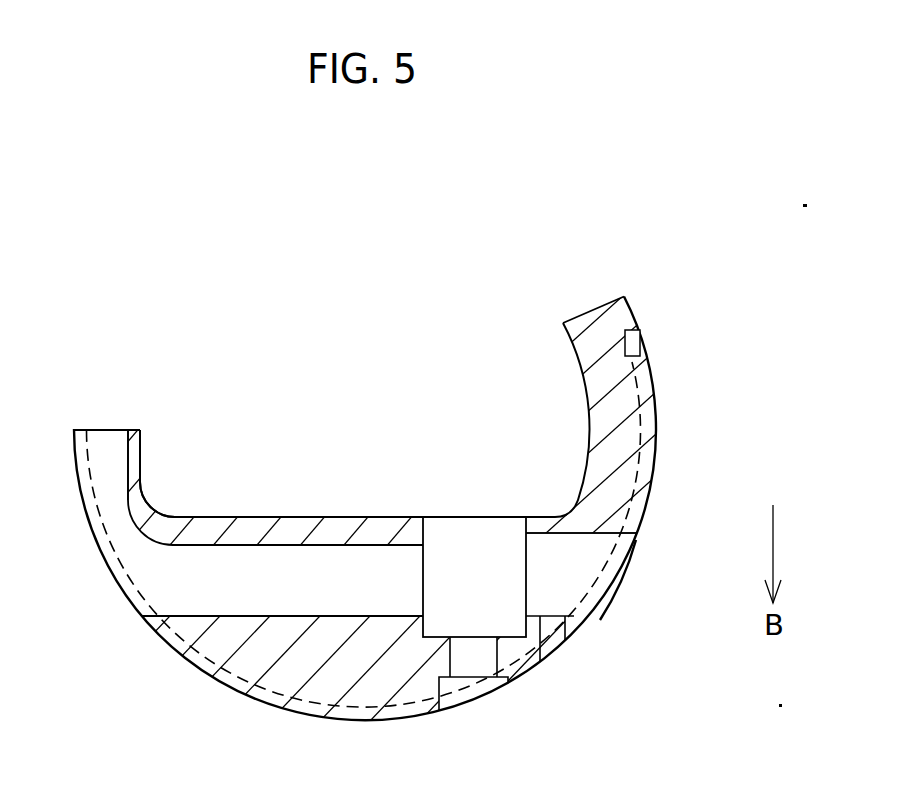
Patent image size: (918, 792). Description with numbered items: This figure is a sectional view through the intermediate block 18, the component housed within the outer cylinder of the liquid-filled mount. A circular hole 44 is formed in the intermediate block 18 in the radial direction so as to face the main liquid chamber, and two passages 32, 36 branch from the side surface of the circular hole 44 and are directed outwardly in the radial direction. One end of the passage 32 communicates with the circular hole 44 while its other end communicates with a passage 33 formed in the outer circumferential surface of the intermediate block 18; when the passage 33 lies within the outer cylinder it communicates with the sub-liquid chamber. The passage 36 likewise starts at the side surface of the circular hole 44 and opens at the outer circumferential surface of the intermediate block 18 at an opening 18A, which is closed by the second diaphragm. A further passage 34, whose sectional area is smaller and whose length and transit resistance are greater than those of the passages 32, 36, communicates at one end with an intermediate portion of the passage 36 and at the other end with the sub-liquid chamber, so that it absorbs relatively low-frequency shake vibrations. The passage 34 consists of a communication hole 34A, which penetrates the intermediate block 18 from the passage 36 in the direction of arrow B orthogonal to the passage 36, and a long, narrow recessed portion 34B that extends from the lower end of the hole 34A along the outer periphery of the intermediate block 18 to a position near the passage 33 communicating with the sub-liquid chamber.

The intermediate block 18 is at (644, 290).
The opening 18A is at (634, 551).
The passage 32 is at (273, 547).
The passage 33 is at (127, 457).
The passage 34 is at (650, 438).
The communication hole 34A is at (543, 626).
The recessed portion 34B is at (637, 335).
The passage 36 is at (580, 533).
The circular hole 44 is at (518, 553).